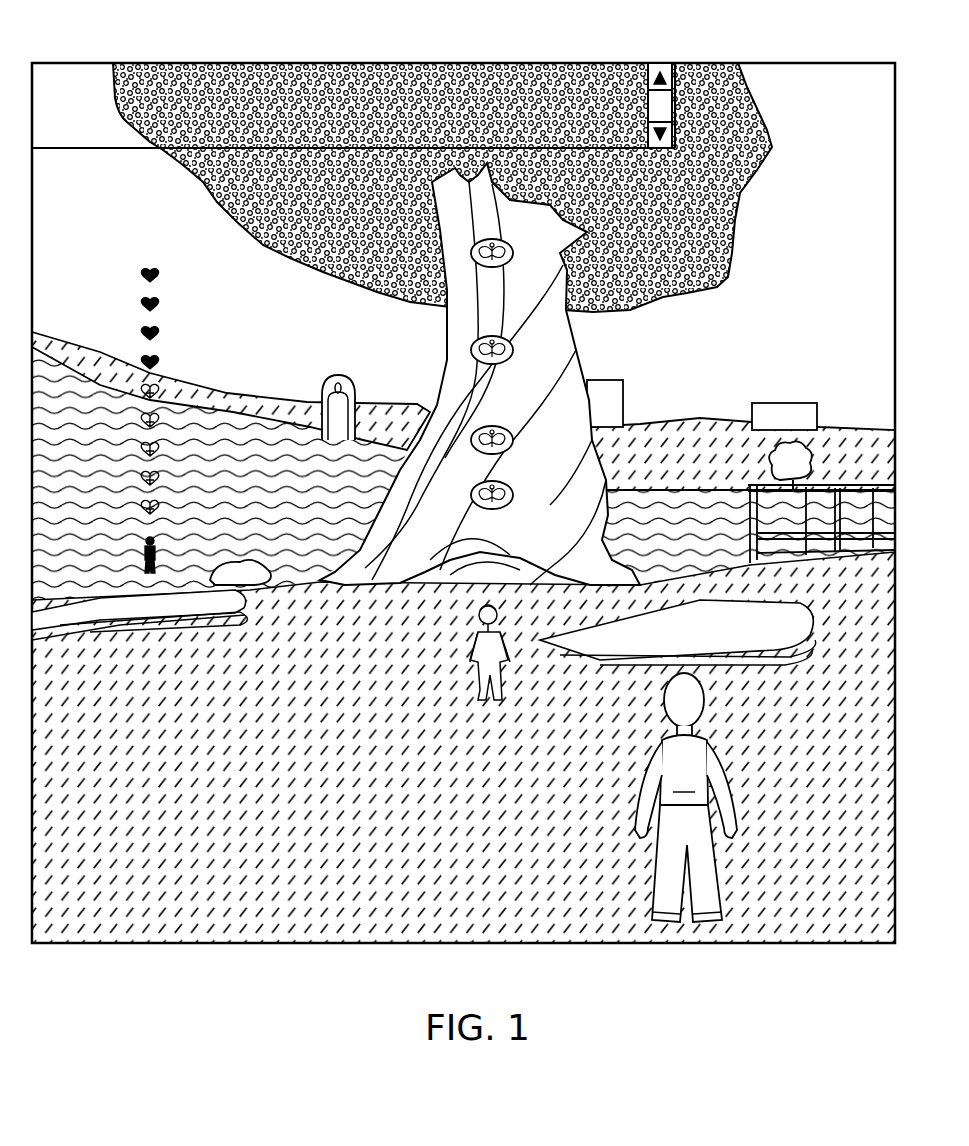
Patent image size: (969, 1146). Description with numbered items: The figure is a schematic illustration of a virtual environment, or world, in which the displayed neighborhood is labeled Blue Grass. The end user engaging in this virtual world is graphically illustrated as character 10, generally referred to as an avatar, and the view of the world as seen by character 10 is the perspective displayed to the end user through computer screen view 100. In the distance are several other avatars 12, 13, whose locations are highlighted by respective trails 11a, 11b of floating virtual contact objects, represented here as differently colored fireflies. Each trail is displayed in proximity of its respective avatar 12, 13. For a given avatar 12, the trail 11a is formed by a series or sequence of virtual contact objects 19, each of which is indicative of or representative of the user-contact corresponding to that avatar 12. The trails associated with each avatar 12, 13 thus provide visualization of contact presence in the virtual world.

The computer screen view 100 is at (760, 63).
The character 10 is at (686, 797).
The trail 11a is at (528, 362).
The trail 11b is at (160, 517).
The avatar 12 is at (468, 640).
The avatar 13 is at (137, 562).
The virtual contact object 19 is at (145, 449).